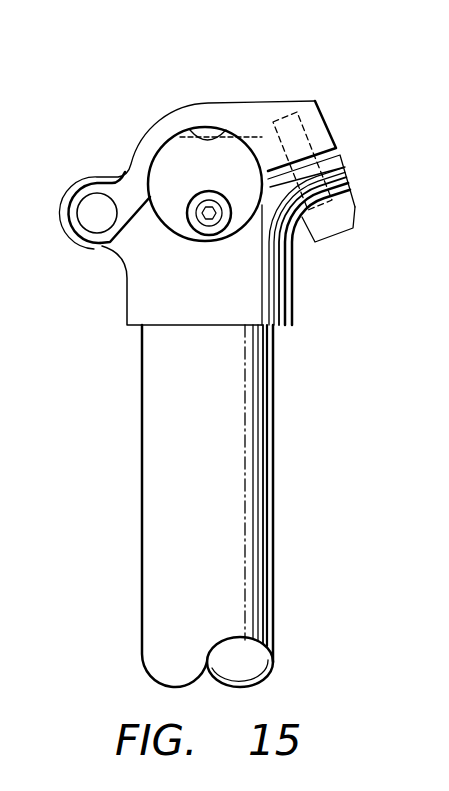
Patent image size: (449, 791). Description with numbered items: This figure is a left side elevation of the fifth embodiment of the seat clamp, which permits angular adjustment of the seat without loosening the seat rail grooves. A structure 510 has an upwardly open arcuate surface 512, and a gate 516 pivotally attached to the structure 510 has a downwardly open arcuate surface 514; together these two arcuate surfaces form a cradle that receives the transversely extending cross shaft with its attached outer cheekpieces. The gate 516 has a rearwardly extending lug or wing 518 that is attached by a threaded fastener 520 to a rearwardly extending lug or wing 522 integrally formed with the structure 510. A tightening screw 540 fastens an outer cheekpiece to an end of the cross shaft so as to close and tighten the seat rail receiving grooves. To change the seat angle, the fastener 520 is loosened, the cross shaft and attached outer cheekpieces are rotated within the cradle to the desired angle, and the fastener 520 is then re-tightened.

The structure 510 is at (123, 292).
The upwardly open arcuate surface 512 is at (240, 242).
The downwardly open arcuate surface 514 is at (229, 128).
The gate 516 is at (158, 117).
The rearwardly extending lug or wing 518 is at (315, 101).
The threaded fastener 520 is at (339, 238).
The rearwardly extending lug or wing 522 is at (347, 163).
The tightening screw 540 is at (359, 238).